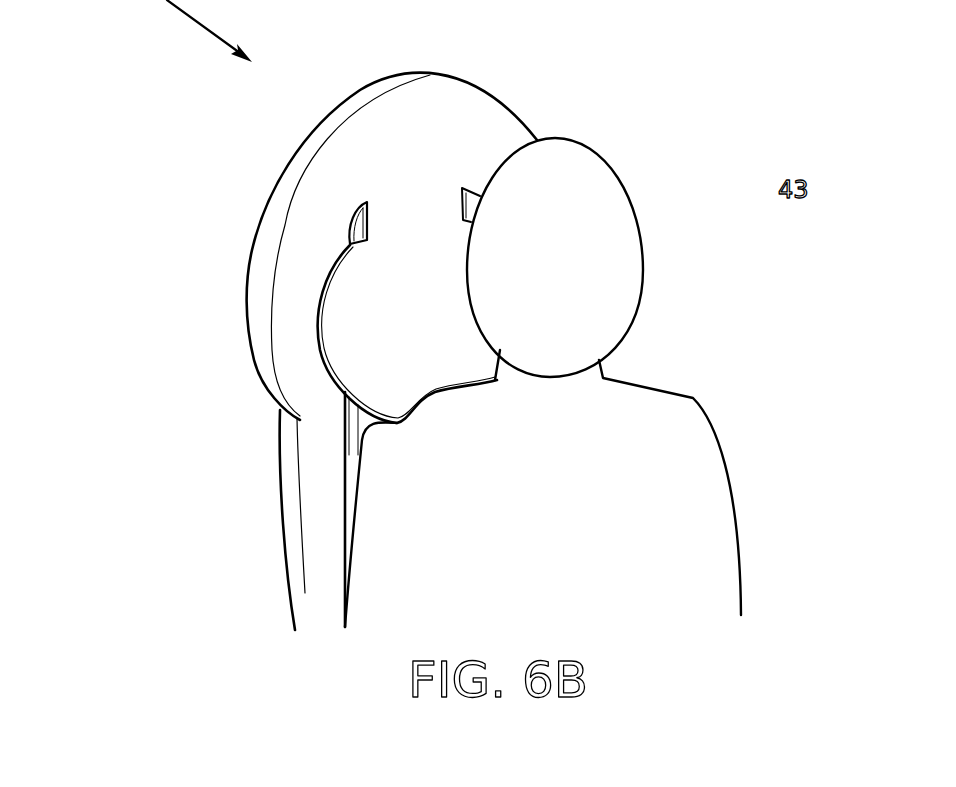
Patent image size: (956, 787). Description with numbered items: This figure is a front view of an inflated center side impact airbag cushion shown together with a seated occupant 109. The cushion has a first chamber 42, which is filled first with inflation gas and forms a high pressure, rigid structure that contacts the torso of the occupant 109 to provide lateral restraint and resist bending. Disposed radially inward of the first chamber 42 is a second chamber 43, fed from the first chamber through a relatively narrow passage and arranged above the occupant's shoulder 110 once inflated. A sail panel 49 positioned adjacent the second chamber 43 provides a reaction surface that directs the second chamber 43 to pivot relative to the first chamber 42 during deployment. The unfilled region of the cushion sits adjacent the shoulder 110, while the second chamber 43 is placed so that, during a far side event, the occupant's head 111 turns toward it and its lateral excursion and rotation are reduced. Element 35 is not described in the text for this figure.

The first chamber 42 is at (290, 182).
The second chamber 43 is at (458, 342).
The sail panel 49 is at (350, 246).
The strap 35 is at (357, 447).
The occupant shoulder 110 is at (462, 477).
The occupant head 111 is at (617, 197).
The occupant 109 is at (567, 563).